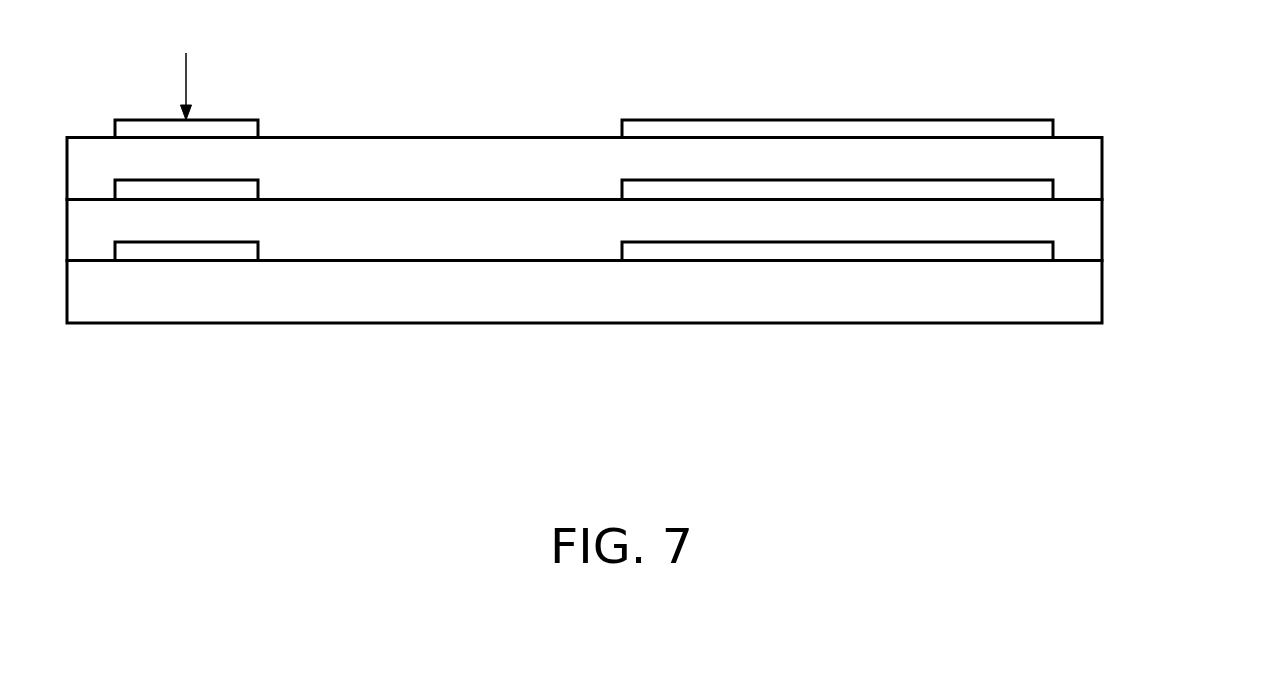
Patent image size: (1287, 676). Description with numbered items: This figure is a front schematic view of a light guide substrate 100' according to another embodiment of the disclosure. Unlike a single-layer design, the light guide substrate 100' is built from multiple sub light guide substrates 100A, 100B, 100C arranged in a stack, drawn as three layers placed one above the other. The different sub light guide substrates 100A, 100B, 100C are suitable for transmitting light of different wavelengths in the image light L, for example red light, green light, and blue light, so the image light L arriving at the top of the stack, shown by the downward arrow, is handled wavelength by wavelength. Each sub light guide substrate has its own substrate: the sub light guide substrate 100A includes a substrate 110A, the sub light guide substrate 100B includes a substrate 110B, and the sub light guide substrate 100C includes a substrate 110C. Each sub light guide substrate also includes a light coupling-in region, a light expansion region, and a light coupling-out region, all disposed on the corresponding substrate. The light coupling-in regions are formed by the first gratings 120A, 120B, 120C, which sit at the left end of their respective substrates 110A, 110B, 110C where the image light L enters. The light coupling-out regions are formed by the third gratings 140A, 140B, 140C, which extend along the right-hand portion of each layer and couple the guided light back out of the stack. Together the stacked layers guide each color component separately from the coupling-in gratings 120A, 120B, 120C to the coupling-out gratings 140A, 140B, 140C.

The light guide substrate 100' is at (669, 272).
The sub light guide substrate 100A is at (669, 149).
The sub light guide substrate 100B is at (669, 211).
The sub light guide substrate 100C is at (669, 273).
The substrate 110A is at (1083, 170).
The substrate 110B is at (1083, 232).
The substrate 110C is at (1083, 294).
The first grating 120A is at (243, 129).
The first grating 120B is at (243, 191).
The first grating 120C is at (243, 252).
The third grating 140A is at (628, 132).
The third grating 140B is at (628, 192).
The third grating 140C is at (628, 253).
The image light L is at (186, 82).